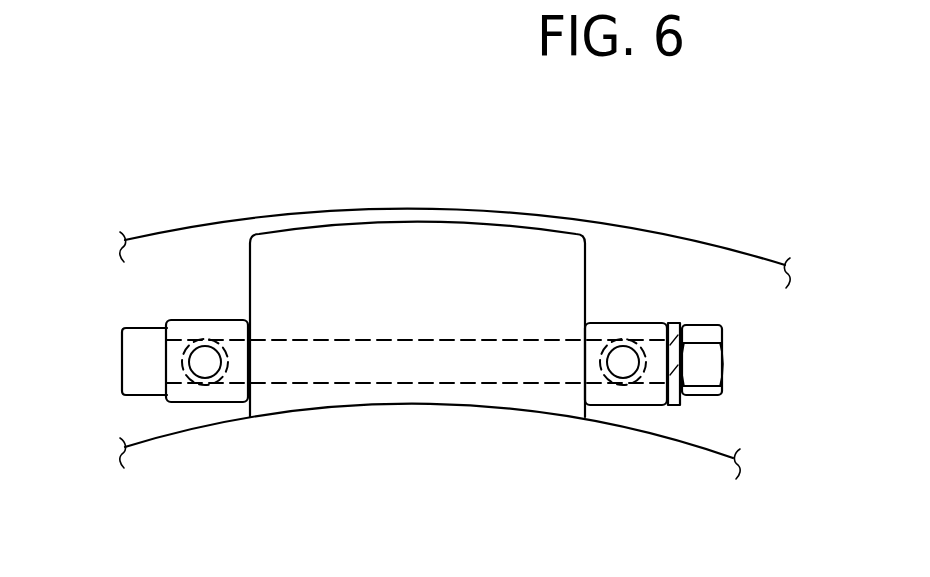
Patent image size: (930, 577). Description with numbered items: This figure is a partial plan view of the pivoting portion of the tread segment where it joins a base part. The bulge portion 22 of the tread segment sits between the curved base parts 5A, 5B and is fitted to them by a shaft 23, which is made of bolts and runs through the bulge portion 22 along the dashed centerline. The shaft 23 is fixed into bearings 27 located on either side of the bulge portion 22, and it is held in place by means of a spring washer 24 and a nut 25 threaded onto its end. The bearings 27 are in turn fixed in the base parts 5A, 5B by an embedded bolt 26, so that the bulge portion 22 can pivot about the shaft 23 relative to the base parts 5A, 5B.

The base part 5A is at (455, 275).
The base part 5B is at (213, 224).
The bulge portion 22 is at (388, 233).
The shaft 23 is at (480, 338).
The spring washer 24 is at (676, 323).
The nut 25 is at (702, 322).
The embedded bolt 26 is at (238, 392).
The bearing 27 is at (193, 318).